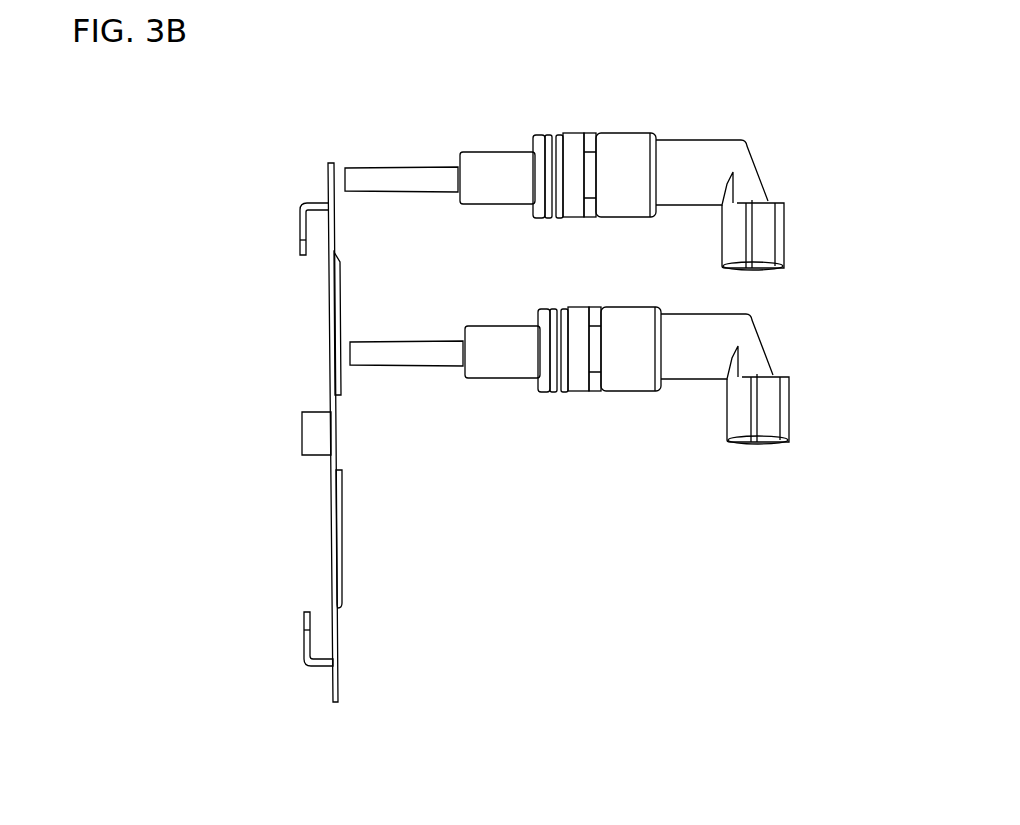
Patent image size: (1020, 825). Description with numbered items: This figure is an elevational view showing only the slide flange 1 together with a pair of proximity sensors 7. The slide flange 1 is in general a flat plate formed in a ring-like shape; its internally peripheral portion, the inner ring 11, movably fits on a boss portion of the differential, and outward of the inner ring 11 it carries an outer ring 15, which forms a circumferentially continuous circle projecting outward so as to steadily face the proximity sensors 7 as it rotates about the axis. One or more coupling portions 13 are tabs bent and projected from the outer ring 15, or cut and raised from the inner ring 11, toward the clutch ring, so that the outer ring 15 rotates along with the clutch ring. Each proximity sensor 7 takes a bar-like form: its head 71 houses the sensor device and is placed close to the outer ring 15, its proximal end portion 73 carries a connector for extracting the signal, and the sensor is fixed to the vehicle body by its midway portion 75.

The slide flange 1 is at (331, 136).
The proximity sensor 7 is at (571, 119).
The inner ring 11 is at (339, 290).
The coupling portion 13 is at (301, 222).
The outer ring 15 is at (328, 176).
The head 71 is at (403, 165).
The proximal end portion 73 is at (733, 140).
The midway portion 75 is at (626, 133).